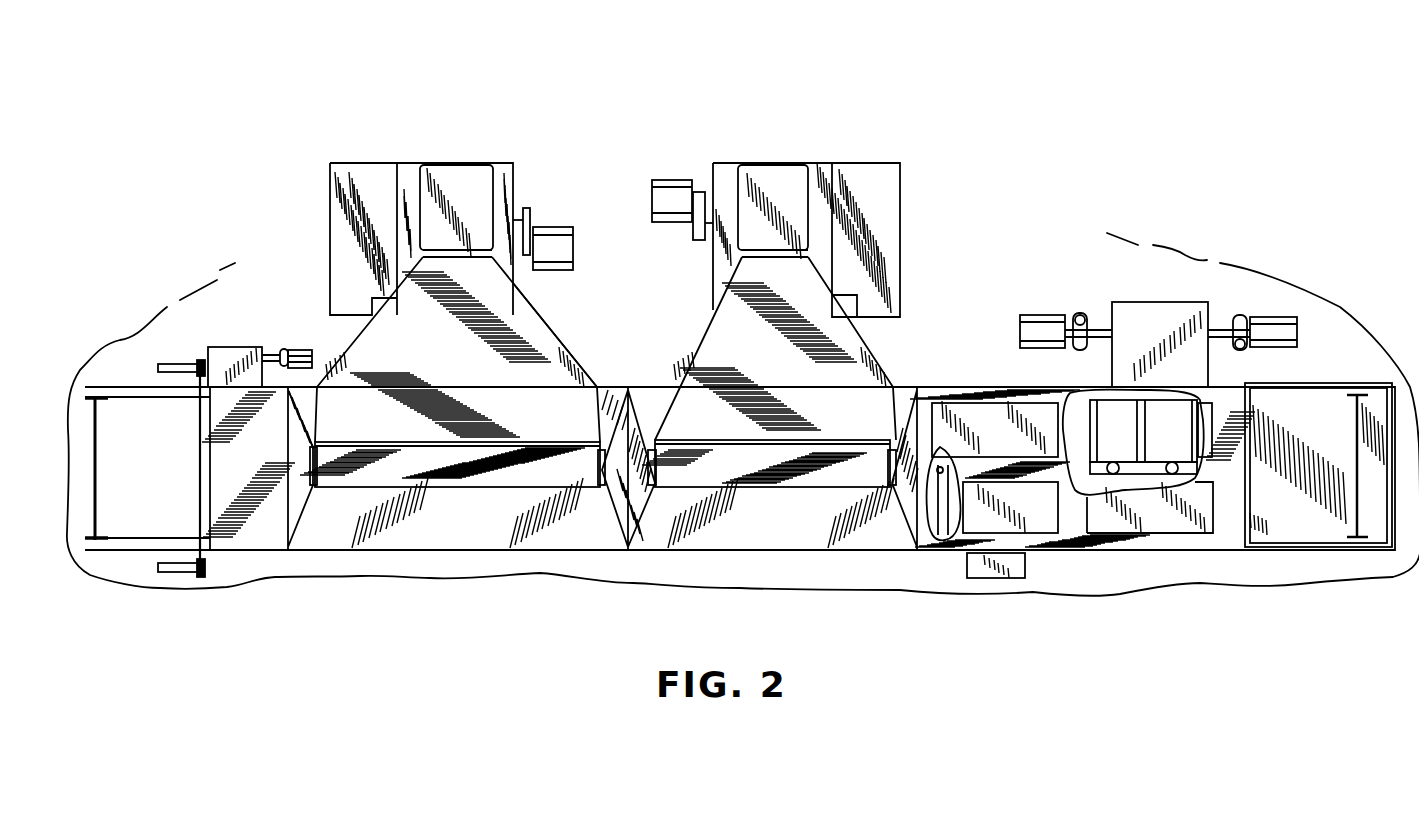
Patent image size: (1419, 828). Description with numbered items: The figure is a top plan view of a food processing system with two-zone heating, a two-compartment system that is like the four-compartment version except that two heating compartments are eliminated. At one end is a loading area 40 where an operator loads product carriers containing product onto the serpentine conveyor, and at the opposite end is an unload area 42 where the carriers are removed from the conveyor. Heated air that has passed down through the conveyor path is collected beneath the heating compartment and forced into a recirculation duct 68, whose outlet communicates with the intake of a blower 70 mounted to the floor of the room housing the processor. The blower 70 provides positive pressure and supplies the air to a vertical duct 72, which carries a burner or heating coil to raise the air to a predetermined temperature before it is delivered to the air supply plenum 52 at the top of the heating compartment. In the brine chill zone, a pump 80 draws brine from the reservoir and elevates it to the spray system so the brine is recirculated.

The loading area 40 is at (183, 313).
The unload area 42 is at (1330, 337).
The air supply plenum 52 is at (538, 300).
The recirculation duct 68 is at (568, 360).
The blower 70 is at (533, 163).
The vertical duct 72 is at (415, 197).
The pump 80 is at (1147, 292).